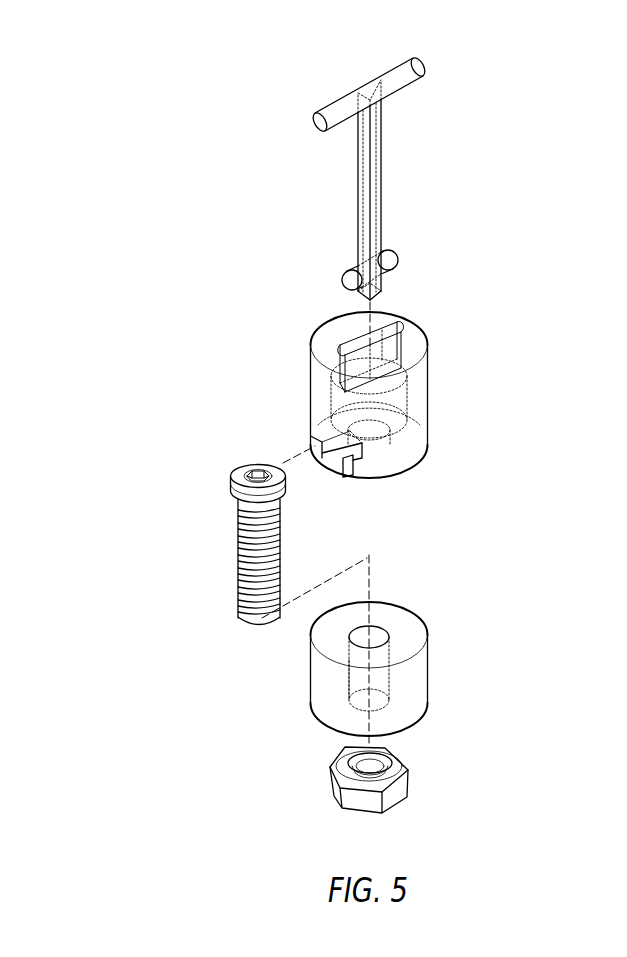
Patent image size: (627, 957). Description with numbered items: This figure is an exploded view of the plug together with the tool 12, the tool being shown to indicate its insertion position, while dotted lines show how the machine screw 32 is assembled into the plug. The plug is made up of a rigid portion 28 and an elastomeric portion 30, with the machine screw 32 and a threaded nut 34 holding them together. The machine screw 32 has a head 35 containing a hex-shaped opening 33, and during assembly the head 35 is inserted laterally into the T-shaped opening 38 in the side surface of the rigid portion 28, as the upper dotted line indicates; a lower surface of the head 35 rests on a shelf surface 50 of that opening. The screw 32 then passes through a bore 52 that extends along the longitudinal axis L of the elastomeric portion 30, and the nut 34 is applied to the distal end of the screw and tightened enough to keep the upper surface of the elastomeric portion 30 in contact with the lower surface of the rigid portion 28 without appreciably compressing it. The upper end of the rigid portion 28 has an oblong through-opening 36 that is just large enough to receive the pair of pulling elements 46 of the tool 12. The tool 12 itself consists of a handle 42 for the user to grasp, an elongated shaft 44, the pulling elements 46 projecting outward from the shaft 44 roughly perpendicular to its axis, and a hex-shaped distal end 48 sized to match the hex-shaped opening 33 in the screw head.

The tool 12 is at (284, 180).
The rigid portion 28 is at (431, 407).
The elastomeric portion 30 is at (431, 677).
The machine screw 32 is at (238, 558).
The hex-shaped opening 33 is at (254, 474).
The threaded nut 34 is at (410, 789).
The head 35 is at (231, 481).
The oblong through-opening 36 is at (388, 327).
The T-shaped opening 38 is at (347, 478).
The handle 42 is at (366, 80).
The elongated shaft 44 is at (382, 140).
The pulling elements 46 is at (383, 253).
The hex-shaped distal end 48 is at (381, 282).
The shelf surface 50 is at (317, 459).
The bore 52 is at (378, 633).
The longitudinal axis L is at (353, 688).